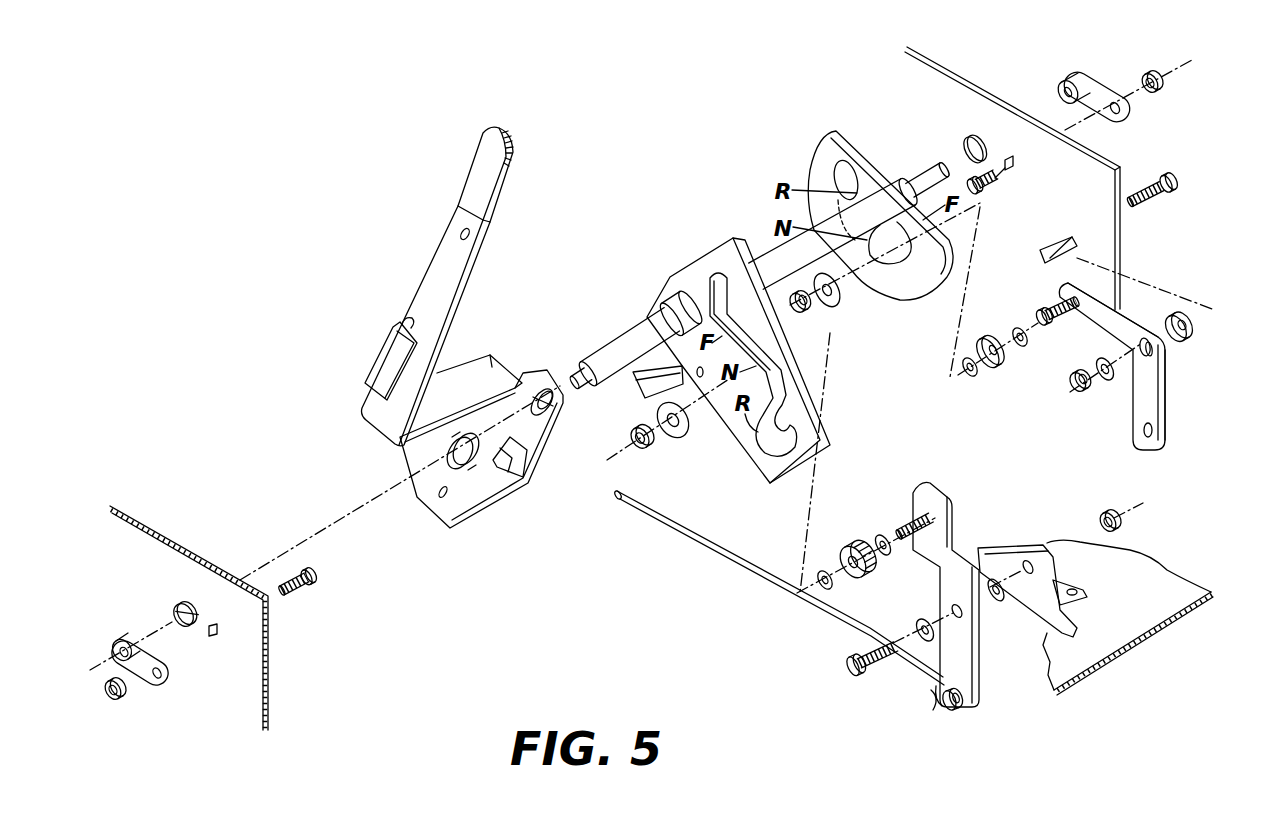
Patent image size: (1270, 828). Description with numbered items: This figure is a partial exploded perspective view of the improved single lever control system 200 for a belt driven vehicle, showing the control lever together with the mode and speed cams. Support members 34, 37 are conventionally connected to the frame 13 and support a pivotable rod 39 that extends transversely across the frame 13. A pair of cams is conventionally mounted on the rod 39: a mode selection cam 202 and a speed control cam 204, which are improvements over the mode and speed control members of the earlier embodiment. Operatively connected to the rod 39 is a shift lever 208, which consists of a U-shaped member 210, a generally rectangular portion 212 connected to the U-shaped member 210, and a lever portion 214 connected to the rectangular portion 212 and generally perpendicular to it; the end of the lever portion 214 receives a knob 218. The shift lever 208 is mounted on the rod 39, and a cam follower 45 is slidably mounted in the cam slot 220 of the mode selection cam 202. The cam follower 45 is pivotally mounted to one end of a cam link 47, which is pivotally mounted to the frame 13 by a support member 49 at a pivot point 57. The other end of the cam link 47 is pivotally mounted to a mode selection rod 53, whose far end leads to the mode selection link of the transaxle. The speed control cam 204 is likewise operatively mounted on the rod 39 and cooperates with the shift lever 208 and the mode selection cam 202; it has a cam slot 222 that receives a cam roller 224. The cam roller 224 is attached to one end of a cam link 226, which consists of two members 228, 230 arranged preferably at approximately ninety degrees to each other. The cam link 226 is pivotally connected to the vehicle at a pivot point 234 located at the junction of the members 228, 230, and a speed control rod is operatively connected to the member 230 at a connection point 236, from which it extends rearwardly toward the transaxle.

The single lever control system 200 is at (633, 70).
The shift lever 208 is at (384, 240).
The knob 218 is at (490, 130).
The lever portion 214 is at (475, 272).
The rectangular portion 212 is at (482, 350).
The U-shaped member 210 is at (497, 503).
The pivotable rod 39 is at (618, 345).
The mode selection cam 202 is at (727, 242).
The cam slot 220 is at (760, 450).
The speed control cam 204 is at (857, 137).
The cam slot 222 is at (903, 258).
The support member 34 is at (1097, 73).
The member 228 is at (1130, 317).
The cam roller 224 is at (1007, 363).
The pivot point 234 is at (1115, 385).
The cam link 226 is at (1178, 380).
The member 230 is at (1168, 418).
The connection point 236 is at (1141, 438).
The cam follower 45 is at (855, 542).
The cam link 47 is at (950, 523).
The support member 49 is at (1013, 545).
The pivot point 57 is at (1027, 575).
The mode selection rod 53 is at (722, 558).
The frame 13 is at (1174, 570).
The support member 37 is at (140, 682).